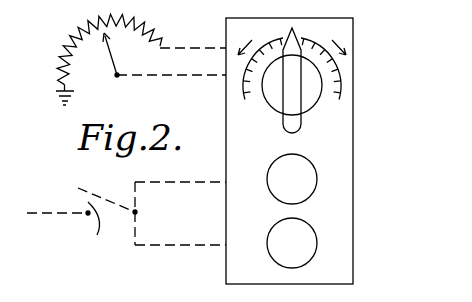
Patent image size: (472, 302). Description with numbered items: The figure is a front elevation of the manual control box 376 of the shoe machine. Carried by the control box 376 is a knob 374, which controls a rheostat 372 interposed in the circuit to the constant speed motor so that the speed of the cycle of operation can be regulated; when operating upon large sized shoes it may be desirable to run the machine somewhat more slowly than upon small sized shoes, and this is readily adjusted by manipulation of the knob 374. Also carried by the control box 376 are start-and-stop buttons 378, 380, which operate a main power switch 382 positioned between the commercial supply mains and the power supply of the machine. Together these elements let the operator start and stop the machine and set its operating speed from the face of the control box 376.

The speed control rheostat 372 is at (106, 19).
The control knob 374 is at (292, 100).
The control panel 376 is at (354, 141).
The start button 378 is at (317, 179).
The stop button 380 is at (317, 243).
The switch 382 is at (126, 221).